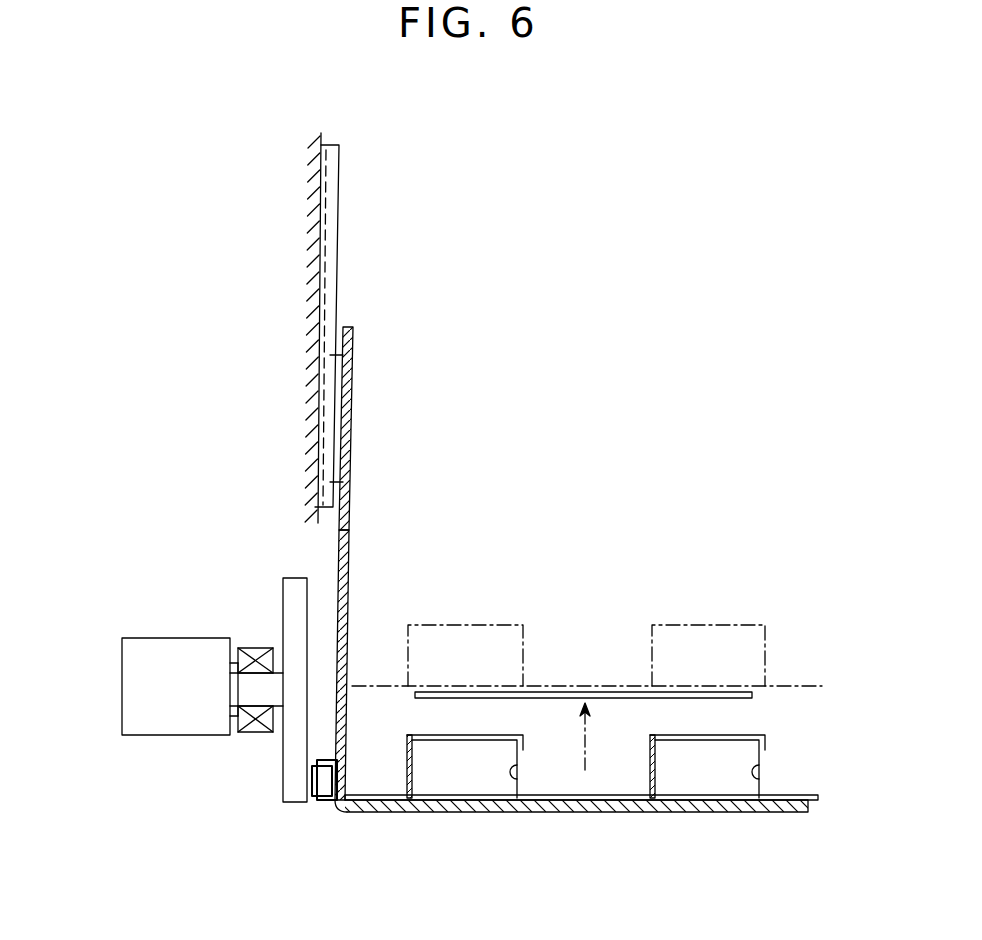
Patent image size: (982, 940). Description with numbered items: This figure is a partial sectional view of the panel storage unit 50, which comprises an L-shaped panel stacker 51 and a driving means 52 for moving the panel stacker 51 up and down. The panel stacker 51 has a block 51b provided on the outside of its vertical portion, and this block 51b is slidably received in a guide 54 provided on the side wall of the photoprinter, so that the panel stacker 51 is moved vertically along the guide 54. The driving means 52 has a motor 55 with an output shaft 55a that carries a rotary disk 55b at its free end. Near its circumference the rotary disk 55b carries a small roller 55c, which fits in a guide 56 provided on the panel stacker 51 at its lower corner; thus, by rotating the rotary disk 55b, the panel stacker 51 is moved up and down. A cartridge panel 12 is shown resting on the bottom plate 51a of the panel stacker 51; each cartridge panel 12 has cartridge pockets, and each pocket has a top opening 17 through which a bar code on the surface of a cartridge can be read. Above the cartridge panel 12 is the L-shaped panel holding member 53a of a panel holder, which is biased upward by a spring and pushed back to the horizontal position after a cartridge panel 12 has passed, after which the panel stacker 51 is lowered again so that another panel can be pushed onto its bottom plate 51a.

The panel storage unit 50 is at (277, 517).
The panel stacker 51 is at (350, 538).
The bottom plate 51a is at (575, 813).
The block 51b is at (345, 418).
The driving means 52 is at (186, 632).
The panel holding member 53a is at (612, 692).
The guide 54 is at (335, 245).
The motor 55 is at (127, 673).
The output shaft 55a is at (247, 685).
The rotary disk 55b is at (286, 748).
The small roller 55c is at (310, 780).
The guide 56 is at (330, 803).
The top opening 17 is at (733, 736).
The cartridge panel 12 is at (770, 772).